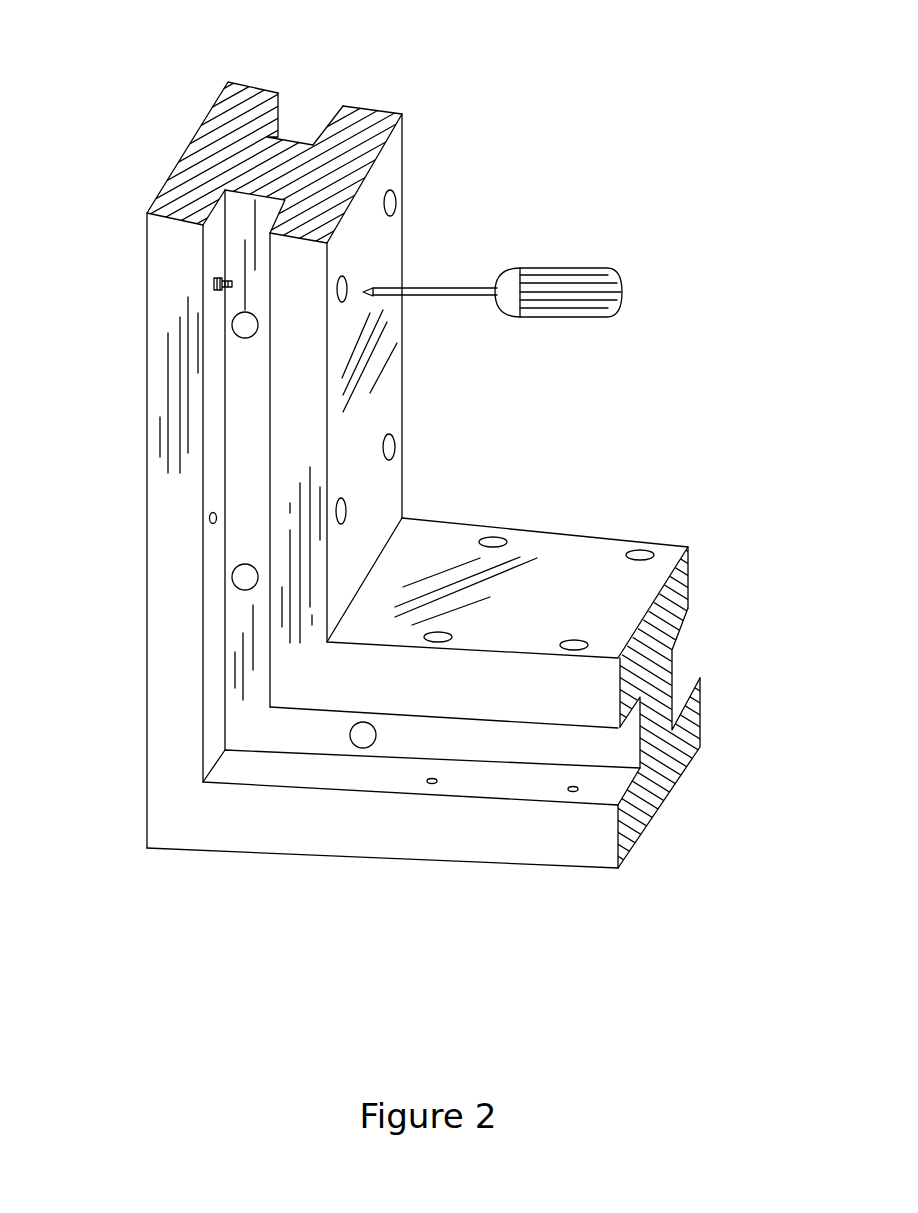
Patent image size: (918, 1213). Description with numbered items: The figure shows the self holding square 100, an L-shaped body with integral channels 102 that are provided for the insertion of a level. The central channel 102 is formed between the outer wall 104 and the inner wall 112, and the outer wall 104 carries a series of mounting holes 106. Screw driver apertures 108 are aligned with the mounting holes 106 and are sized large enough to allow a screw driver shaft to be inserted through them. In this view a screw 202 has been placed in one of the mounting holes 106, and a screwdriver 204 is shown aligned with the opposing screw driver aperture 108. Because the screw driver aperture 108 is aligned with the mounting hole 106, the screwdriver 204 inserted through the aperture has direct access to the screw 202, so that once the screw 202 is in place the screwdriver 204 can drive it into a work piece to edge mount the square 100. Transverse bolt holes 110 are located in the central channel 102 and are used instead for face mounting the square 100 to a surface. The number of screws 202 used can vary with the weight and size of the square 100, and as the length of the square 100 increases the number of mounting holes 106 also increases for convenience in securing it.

The self holding square 100 is at (707, 372).
The central channel 102 is at (310, 126).
The outer wall 104 is at (192, 825).
The mounting holes 106 is at (212, 283).
The screw driver apertures 108 is at (348, 288).
The transverse bolt holes 110 is at (248, 320).
The inner wall 112 is at (292, 692).
The screw 202 is at (230, 290).
The screwdriver 204 is at (512, 312).